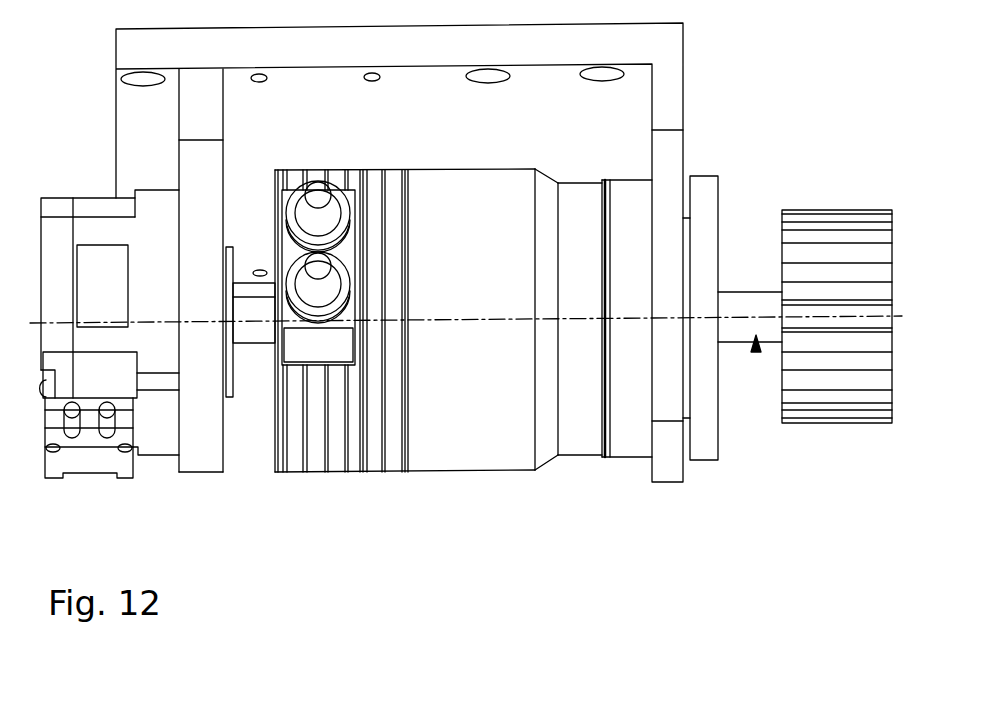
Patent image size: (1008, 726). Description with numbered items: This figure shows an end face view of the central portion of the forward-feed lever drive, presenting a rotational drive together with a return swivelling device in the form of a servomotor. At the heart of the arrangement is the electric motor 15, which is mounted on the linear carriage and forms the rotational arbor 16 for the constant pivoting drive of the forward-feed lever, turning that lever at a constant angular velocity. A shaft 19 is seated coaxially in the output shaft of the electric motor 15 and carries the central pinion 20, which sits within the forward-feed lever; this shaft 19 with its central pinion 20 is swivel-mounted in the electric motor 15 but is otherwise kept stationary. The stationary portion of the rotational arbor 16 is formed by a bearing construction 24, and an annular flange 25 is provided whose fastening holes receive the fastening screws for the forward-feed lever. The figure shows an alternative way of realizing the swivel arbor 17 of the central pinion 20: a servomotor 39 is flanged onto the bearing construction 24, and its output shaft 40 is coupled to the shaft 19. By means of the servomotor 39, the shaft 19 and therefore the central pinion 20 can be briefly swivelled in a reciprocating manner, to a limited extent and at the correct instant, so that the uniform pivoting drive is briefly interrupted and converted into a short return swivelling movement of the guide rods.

The electric motor 15 is at (452, 460).
The rotational arbor 16 is at (837, 262).
The return swivel arbor 17 is at (757, 352).
The shaft 19 is at (740, 337).
The central pinion 20 is at (831, 410).
The bearing construction 24 is at (633, 45).
The annular flange 25 is at (703, 185).
The servomotor 39 is at (67, 340).
The output shaft 40 is at (247, 343).